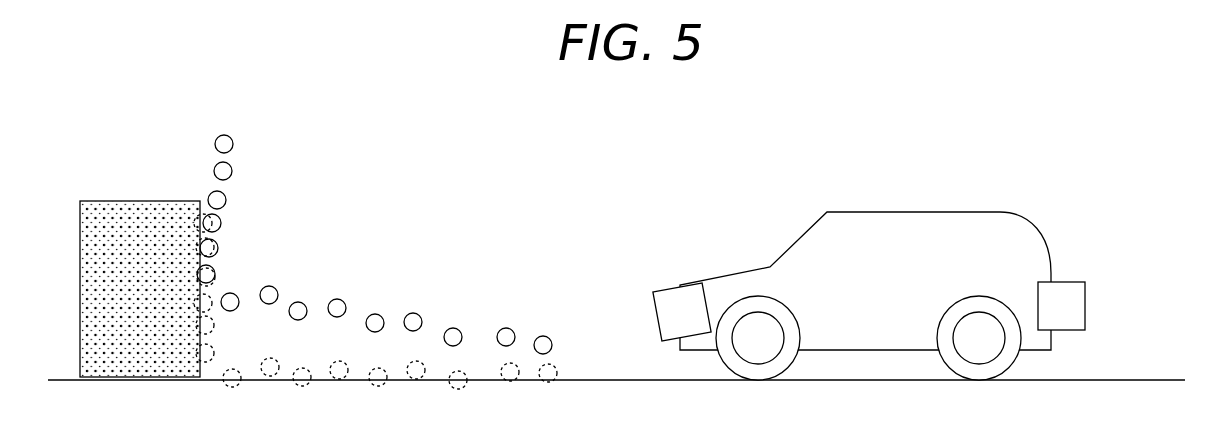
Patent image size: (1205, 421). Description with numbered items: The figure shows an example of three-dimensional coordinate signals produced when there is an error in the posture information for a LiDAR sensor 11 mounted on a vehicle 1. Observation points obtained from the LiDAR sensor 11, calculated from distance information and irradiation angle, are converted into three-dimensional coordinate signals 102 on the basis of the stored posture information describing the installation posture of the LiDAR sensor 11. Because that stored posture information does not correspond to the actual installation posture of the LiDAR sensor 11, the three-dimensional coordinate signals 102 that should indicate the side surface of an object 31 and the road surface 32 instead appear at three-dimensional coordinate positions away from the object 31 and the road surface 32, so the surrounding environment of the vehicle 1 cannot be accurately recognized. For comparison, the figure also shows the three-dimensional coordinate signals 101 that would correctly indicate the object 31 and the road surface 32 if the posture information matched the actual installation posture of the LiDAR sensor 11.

The vehicle 1 is at (945, 211).
The LiDAR sensor 11 is at (665, 291).
The object 31 is at (141, 200).
The road surface 32 is at (619, 379).
The three-dimensional coordinate signal 101 is at (334, 368).
The three-dimensional coordinate signal 102 is at (412, 312).